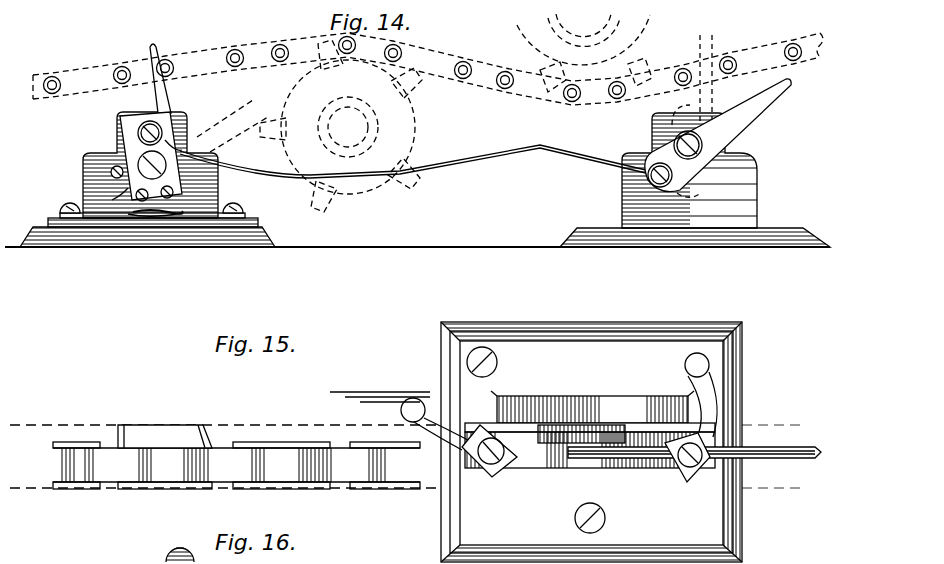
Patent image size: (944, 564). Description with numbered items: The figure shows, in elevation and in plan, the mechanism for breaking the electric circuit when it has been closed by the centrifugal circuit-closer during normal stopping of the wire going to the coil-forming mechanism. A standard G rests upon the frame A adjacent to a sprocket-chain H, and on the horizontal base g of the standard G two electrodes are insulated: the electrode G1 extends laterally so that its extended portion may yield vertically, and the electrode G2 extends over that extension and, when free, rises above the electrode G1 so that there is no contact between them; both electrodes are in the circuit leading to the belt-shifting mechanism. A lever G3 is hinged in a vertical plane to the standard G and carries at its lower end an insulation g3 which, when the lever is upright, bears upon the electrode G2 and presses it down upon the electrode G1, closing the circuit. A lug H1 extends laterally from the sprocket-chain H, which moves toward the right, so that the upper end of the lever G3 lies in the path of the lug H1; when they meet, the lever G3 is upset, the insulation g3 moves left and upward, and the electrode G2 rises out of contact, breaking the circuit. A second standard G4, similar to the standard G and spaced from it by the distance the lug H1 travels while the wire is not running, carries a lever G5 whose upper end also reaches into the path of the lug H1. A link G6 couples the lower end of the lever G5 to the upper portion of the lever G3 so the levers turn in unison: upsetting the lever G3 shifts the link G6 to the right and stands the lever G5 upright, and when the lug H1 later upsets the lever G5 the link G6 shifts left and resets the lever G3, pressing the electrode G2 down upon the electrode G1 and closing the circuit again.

In FIG. 14, the frame A is at (417, 239).
In FIG. 14, the standard G is at (88, 172).
In FIG. 15, the standard G is at (619, 410).
In FIG. 14, the electrode G1 is at (123, 214).
In FIG. 15, the electrode G1 is at (531, 465).
In FIG. 14, the electrode G2 is at (182, 212).
In FIG. 15, the electrode G2 is at (656, 468).
In FIG. 14, the lever G3 is at (160, 92).
In FIG. 15, the lever G3 is at (572, 437).
In FIG. 14, the standard G4 is at (689, 131).
In FIG. 14, the lever G5 is at (742, 120).
In FIG. 14, the link G6 is at (460, 168).
In FIG. 15, the link G6 is at (786, 458).
In FIG. 14, the horizontal base g is at (155, 231).
In FIG. 15, the horizontal base g is at (591, 442).
In FIG. 14, the insulation g3 is at (113, 198).
In FIG. 14, the sprocket-chain H is at (483, 85).
In FIG. 15, the sprocket-chain H is at (295, 445).
In FIG. 15, the lug H1 is at (152, 437).